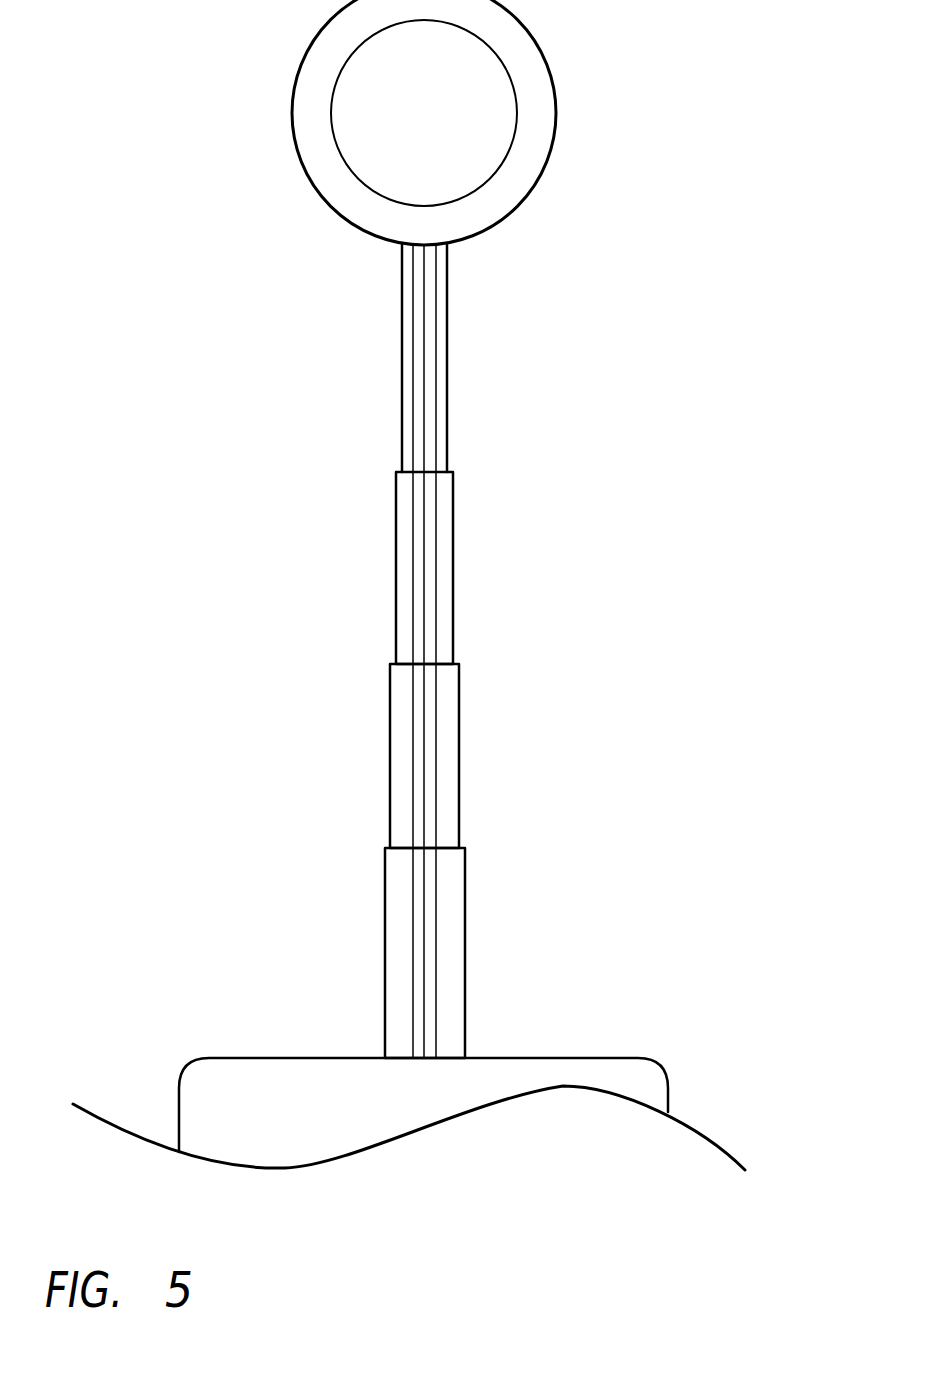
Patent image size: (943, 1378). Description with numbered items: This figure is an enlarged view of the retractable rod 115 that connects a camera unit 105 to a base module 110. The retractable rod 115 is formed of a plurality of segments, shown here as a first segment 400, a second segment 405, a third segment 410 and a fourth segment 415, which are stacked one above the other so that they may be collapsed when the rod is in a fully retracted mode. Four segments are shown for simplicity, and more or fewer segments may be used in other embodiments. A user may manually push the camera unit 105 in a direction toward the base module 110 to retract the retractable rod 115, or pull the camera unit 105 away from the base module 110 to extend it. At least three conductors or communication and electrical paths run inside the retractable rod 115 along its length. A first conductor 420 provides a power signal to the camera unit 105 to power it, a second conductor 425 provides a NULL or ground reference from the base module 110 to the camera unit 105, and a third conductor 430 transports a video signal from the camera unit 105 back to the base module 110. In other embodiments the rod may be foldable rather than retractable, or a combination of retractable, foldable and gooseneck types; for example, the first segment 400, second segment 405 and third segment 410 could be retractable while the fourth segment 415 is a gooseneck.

The camera unit 105 is at (557, 112).
The base module 110 is at (577, 1058).
The retractable rod 115 is at (377, 744).
The first segment 400 is at (385, 965).
The second segment 405 is at (390, 787).
The third segment 410 is at (403, 568).
The fourth segment 415 is at (402, 358).
The first conductor 420 is at (436, 537).
The second conductor 425 is at (424, 691).
The third conductor 430 is at (413, 810).